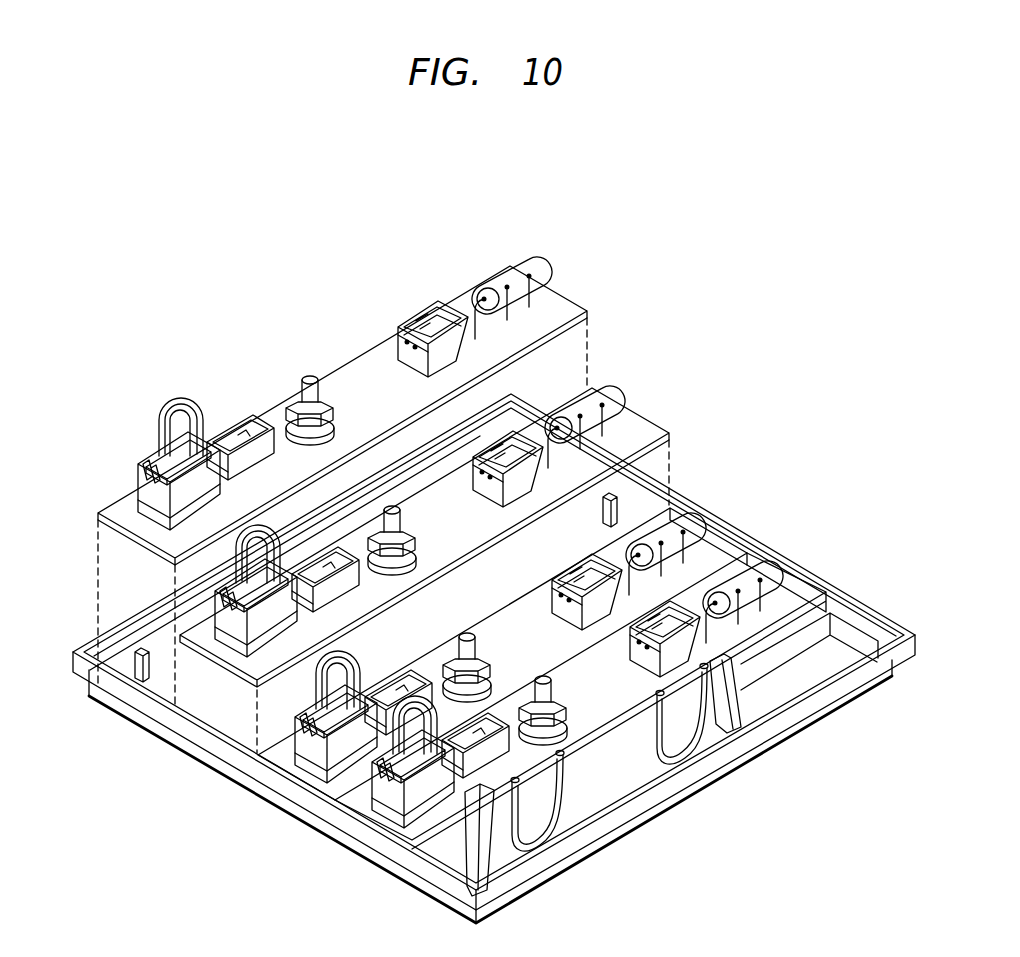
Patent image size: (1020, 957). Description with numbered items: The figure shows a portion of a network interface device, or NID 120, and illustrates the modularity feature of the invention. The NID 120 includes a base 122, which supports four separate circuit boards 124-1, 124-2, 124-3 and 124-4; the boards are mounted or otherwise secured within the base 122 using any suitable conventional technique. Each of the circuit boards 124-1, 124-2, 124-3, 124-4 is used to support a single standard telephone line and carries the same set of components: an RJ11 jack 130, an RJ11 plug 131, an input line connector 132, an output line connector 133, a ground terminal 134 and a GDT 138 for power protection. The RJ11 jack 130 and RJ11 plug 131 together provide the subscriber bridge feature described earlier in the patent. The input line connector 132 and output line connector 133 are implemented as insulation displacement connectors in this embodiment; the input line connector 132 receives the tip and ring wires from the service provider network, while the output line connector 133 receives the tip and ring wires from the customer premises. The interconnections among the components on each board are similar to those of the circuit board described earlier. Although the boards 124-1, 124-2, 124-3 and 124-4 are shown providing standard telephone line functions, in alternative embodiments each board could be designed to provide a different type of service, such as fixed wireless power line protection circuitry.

The NID 120 is at (734, 306).
The base 122 is at (628, 828).
The circuit board 124-1 is at (563, 295).
The circuit board 124-2 is at (637, 422).
The circuit board 124-3 is at (708, 556).
The circuit board 124-4 is at (802, 603).
The RJ11 jack 130 is at (138, 470).
The RJ11 plug 131 is at (184, 394).
The input line connector 132 is at (421, 320).
The output line connector 133 is at (242, 420).
The ground terminal 134 is at (330, 393).
The GDT 138 is at (529, 260).